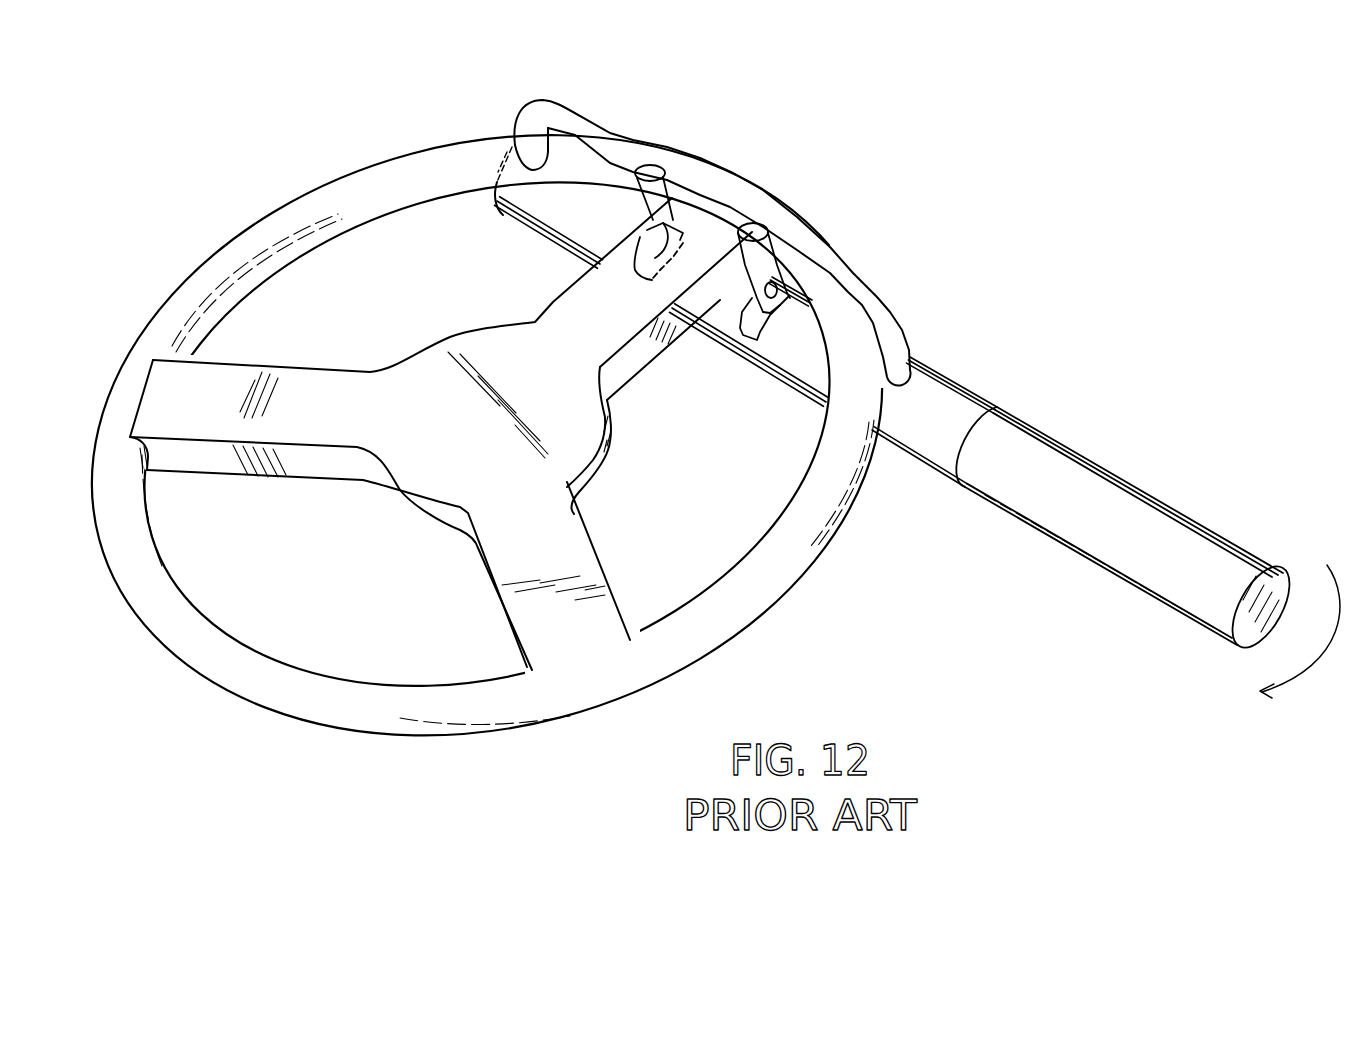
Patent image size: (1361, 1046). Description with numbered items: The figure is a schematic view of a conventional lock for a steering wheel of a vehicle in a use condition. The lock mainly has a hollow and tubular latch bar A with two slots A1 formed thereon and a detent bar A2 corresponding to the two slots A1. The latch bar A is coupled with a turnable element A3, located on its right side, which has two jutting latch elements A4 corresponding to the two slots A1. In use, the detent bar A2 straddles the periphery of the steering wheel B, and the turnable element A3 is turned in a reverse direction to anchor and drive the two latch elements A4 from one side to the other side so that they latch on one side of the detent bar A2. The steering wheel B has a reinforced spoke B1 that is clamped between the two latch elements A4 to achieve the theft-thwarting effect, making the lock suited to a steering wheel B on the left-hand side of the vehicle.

The steering wheel B is at (237, 257).
The reinforced spoke B1 is at (550, 330).
The latch bar A is at (957, 405).
The slots A1 is at (743, 338).
The detent bar A2 is at (713, 183).
The turnable element A3 is at (1107, 487).
The latch elements A4 is at (648, 187).